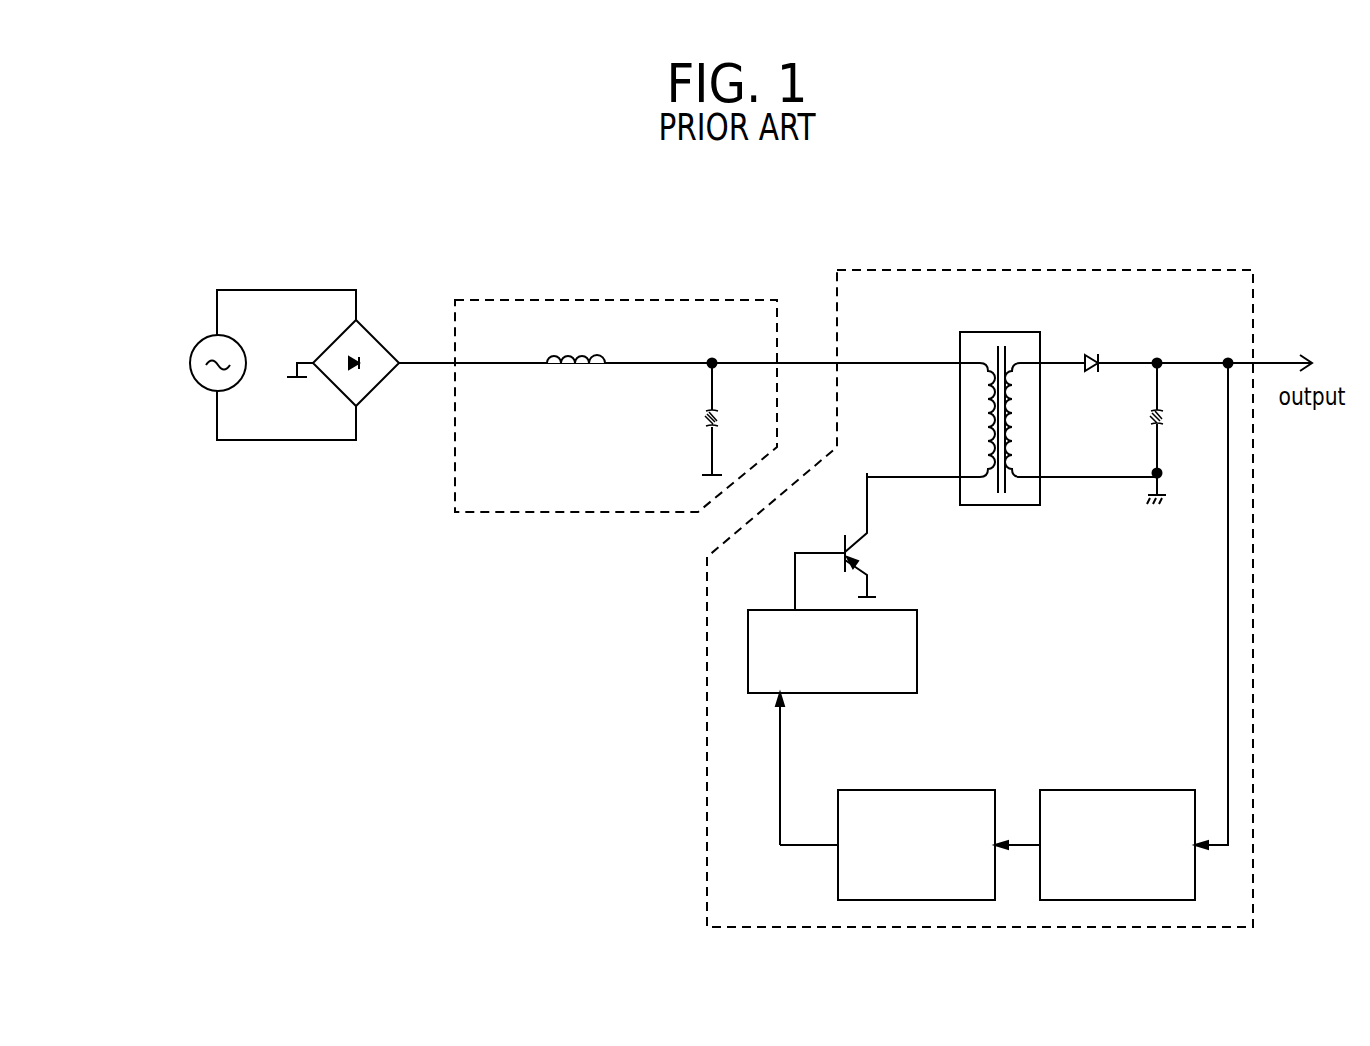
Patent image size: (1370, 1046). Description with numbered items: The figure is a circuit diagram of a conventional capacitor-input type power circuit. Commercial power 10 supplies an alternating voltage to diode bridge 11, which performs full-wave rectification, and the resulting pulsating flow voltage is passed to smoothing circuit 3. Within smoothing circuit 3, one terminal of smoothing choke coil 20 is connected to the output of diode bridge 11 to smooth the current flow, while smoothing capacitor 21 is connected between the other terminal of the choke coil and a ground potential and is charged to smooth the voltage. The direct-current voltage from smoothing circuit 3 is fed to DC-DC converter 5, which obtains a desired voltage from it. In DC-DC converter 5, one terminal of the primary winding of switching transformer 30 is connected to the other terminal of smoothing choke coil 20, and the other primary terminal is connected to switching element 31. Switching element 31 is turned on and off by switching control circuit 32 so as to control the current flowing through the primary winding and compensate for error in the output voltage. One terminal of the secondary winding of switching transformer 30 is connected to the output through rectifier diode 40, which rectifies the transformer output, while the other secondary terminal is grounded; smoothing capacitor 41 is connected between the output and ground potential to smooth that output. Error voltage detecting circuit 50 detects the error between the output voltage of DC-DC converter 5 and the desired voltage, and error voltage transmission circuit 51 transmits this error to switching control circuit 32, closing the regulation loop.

The smoothing circuit 3 is at (575, 300).
The DC-DC converter 5 is at (1100, 270).
The commercial power 10 is at (190, 363).
The diode bridge 11 is at (364, 334).
The smoothing choke coil 20 is at (576, 341).
The smoothing capacitor 21 is at (720, 418).
The switching transformer 30 is at (988, 332).
The switching element 31 is at (840, 548).
The switching control circuit 32 is at (917, 652).
The rectifier diode 40 is at (1096, 349).
The smoothing capacitor 41 is at (1153, 427).
The error voltage detecting circuit 50 is at (1118, 790).
The error voltage transmission circuit 51 is at (928, 790).